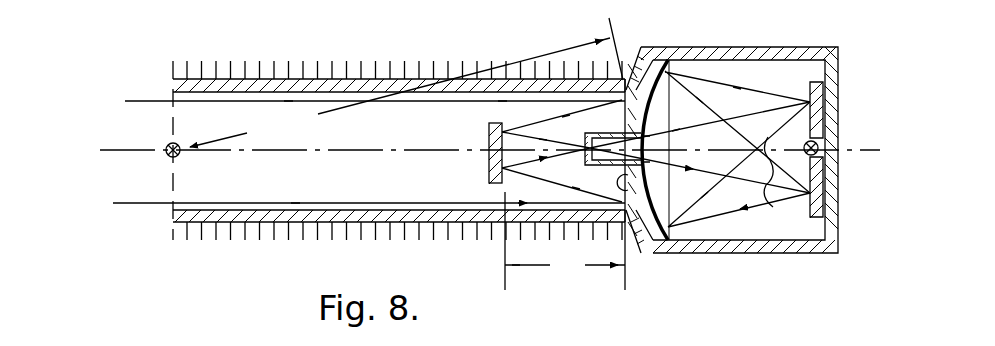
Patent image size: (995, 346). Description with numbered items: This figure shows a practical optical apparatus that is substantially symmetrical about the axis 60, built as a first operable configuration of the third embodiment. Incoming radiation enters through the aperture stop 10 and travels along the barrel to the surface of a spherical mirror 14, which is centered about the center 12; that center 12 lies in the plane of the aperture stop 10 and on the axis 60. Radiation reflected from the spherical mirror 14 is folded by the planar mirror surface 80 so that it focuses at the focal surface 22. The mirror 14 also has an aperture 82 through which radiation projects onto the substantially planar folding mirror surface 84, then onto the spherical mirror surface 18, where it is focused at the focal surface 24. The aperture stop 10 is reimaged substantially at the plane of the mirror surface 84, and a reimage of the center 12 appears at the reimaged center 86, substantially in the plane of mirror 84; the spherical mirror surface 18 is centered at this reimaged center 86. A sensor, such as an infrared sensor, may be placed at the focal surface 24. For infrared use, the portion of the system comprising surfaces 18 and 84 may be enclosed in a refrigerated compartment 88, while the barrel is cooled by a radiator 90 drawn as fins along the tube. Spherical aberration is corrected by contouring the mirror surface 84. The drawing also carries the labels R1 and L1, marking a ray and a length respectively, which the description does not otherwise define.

The aperture stop 10 is at (375, 134).
The center 12 is at (168, 158).
The spherical mirror 14 is at (664, 149).
The spherical mirror surface 18 is at (655, 96).
The focal surface 22 is at (585, 156).
The focal surface 24 is at (775, 184).
The axis 60 is at (368, 153).
The planar mirror surface 80 is at (510, 153).
The aperture 82 is at (655, 148).
The planar folding mirror surface 84 is at (808, 209).
The reimaged center 86 is at (823, 139).
The refrigerated compartment 88 is at (727, 50).
The radiator 90 is at (300, 73).
The ray R1 is at (236, 132).
The distance L1 is at (565, 241).